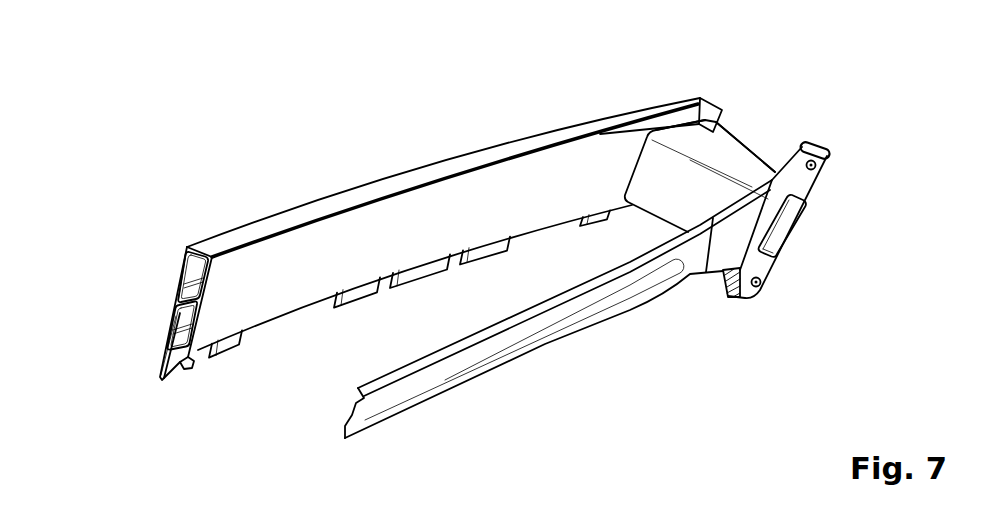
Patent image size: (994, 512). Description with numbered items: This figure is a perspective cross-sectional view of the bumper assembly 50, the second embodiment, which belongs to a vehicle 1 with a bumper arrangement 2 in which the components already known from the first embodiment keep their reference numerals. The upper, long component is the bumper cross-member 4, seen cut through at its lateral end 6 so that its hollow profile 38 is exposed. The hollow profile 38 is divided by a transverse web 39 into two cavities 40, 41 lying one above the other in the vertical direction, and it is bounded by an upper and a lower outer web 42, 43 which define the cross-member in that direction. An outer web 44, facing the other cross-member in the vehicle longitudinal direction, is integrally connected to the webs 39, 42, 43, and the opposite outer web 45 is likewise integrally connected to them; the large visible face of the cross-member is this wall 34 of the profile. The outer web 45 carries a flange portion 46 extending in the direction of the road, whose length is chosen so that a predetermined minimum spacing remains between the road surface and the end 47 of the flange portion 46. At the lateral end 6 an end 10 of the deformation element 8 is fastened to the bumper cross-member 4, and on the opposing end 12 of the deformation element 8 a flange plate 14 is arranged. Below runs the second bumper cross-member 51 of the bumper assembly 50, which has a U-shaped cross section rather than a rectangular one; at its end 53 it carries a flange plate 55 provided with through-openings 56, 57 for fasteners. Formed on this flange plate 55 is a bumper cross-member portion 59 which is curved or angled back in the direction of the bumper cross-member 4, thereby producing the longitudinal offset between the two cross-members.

The roof rail arrangement 1 is at (378, 160).
The roof rail 2 is at (488, 245).
The bumper assembly 50 is at (488, 245).
The bumper cross-member 4 is at (478, 151).
The web wall 34 is at (522, 188).
The lateral end 6 is at (688, 106).
The deformation element 8 is at (730, 149).
The end 10 is at (682, 132).
The end 12 is at (771, 158).
The flange plate 14 is at (806, 142).
The hollow profile 38 is at (200, 309).
The transverse web 39 is at (183, 306).
The cavity 40 is at (177, 322).
The cavity 41 is at (187, 280).
The outer web 42 is at (186, 368).
The outer web 43 is at (202, 258).
The outer web 44 is at (209, 308).
The outer web 45 is at (182, 266).
The flange portion 46 is at (167, 363).
The end 47 is at (163, 392).
The bumper cross-member 51 is at (530, 343).
The end 53 is at (837, 244).
The flange plate 55 is at (775, 260).
The through-opening 56 is at (818, 167).
The through-opening 57 is at (764, 288).
The bumper cross-member portion 59 is at (720, 255).